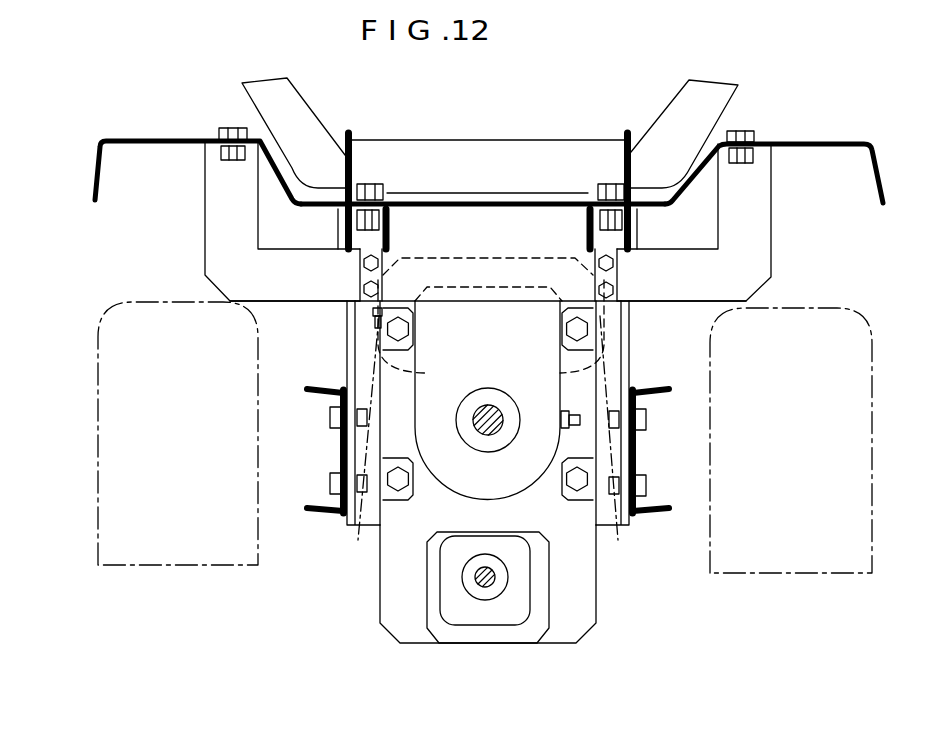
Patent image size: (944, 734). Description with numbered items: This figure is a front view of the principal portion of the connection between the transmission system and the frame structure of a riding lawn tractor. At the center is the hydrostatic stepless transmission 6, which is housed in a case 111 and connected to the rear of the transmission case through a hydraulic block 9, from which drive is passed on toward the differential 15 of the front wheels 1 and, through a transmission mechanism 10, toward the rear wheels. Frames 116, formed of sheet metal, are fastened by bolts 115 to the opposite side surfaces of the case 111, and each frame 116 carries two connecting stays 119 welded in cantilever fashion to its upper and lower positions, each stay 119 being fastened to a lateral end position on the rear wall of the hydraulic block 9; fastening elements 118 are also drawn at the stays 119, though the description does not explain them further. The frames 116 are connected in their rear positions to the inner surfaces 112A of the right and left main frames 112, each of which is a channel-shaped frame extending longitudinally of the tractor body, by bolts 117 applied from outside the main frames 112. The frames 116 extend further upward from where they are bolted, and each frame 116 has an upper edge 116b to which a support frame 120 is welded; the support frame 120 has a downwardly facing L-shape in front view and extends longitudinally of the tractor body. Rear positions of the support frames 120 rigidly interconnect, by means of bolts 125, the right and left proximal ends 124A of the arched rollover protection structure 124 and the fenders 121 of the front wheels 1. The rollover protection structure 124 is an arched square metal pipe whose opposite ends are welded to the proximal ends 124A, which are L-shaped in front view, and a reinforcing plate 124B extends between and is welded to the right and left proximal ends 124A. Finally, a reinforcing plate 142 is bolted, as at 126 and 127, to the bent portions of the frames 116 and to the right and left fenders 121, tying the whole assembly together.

The fender 121 is at (172, 137).
The support frame 120 is at (392, 217).
The rollover protection structure 124 is at (291, 113).
The proximal end 124A is at (627, 173).
The reinforcing plate 124B is at (427, 153).
The bolt 125 is at (372, 183).
The upper edge 116b is at (349, 217).
The reinforcing plate 142 is at (218, 233).
The bolt 126 is at (613, 263).
The bolt 127 is at (615, 291).
The hydrostatic stepless transmission 6 is at (488, 457).
The case 111 is at (520, 478).
The connecting stay 119 is at (413, 328).
The bolt 118 is at (372, 322).
The bolt 115 is at (410, 373).
The frame 116 is at (347, 360).
The inner surface 112A is at (338, 448).
The main frame 112 is at (322, 508).
The bolt 117 is at (330, 418).
The differential 15 is at (357, 438).
The front wheel 1 is at (260, 530).
The hydraulic block 9 is at (410, 562).
The transmission mechanism 10 is at (450, 592).